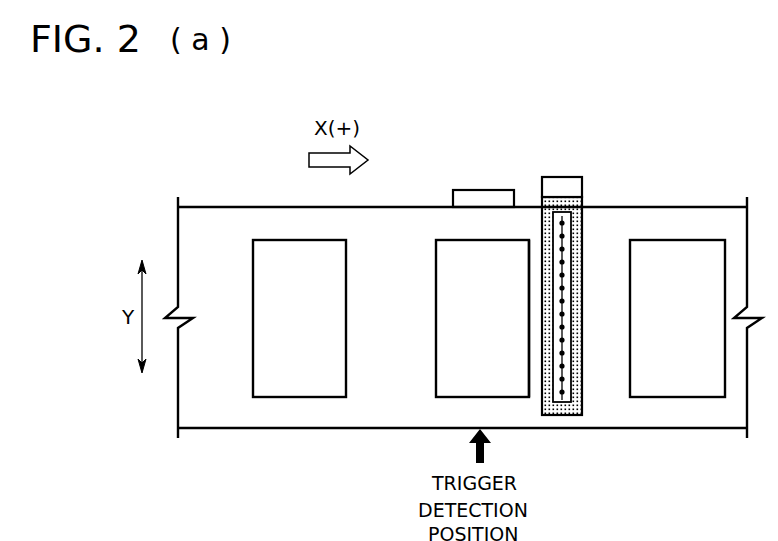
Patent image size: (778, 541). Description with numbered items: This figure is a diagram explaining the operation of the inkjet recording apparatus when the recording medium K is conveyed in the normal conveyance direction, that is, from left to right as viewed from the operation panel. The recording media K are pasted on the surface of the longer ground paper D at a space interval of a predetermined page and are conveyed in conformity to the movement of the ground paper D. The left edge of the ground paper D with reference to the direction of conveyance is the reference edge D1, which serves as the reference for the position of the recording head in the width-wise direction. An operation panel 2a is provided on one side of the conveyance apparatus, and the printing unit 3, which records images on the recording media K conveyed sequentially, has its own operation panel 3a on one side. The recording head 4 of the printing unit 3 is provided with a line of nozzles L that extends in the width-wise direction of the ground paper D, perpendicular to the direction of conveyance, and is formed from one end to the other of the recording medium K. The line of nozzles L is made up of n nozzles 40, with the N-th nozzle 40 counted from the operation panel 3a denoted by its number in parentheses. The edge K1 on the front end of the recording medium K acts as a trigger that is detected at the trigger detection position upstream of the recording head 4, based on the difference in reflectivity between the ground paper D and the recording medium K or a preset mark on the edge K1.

The ground paper D is at (211, 429).
The reference edge D1 is at (395, 207).
The recording medium K is at (285, 398).
The edge K1 is at (529, 290).
The operation panel 2a is at (469, 190).
The printing unit 3 is at (586, 303).
The operation panel 3a is at (561, 177).
The recording head 4 is at (586, 303).
The nozzle 40 is at (560, 395).
The line of nozzles L is at (563, 349).